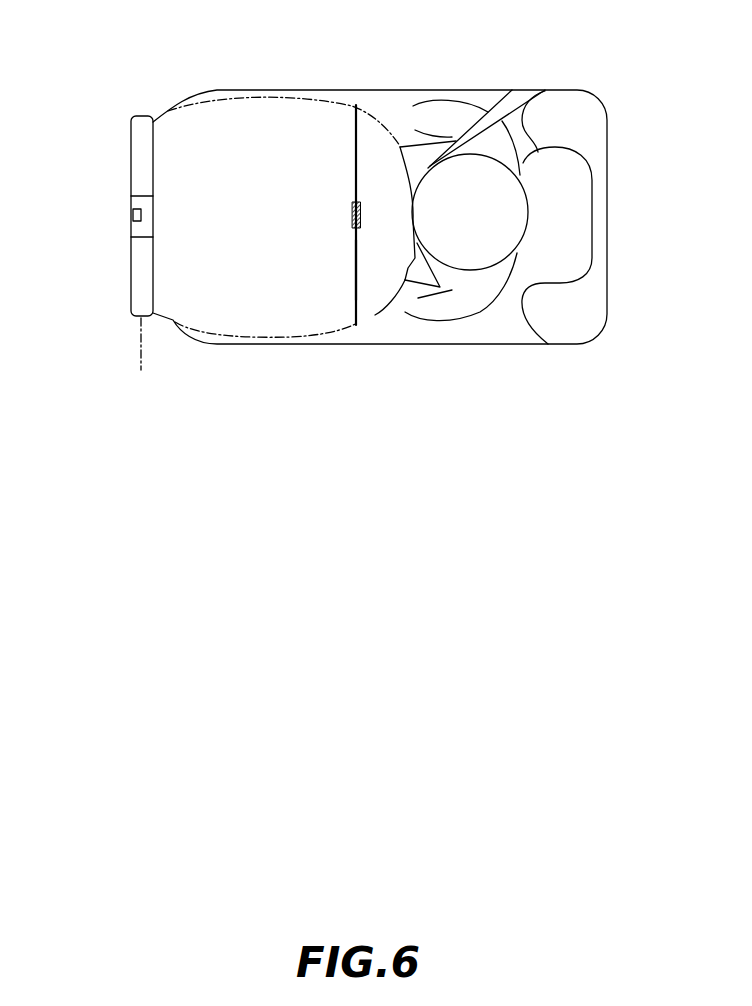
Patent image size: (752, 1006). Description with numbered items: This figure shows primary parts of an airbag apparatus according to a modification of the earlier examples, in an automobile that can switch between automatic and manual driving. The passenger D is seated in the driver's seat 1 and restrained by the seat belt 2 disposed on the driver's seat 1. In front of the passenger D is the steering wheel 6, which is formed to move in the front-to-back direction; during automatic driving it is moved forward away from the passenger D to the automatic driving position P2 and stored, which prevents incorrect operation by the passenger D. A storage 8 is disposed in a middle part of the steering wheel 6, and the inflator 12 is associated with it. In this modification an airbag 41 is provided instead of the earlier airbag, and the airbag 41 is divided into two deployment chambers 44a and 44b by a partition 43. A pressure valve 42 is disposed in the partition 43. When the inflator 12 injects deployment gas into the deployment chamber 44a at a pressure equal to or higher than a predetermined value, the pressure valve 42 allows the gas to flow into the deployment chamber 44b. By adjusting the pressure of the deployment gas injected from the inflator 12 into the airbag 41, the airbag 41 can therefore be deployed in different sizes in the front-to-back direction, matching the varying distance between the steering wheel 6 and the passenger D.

The driver's seat 1 is at (608, 135).
The seat belt 2 is at (501, 98).
The steering wheel 6 is at (130, 130).
The storage 8 is at (147, 194).
The inflator 12 is at (136, 208).
The airbag 41 is at (345, 104).
The pressure valve 42 is at (352, 218).
The partition 43 is at (355, 260).
The deployment chamber 44a is at (300, 312).
The deployment chamber 44b is at (367, 294).
The passenger D is at (472, 269).
The automatic driving position P2 is at (145, 360).